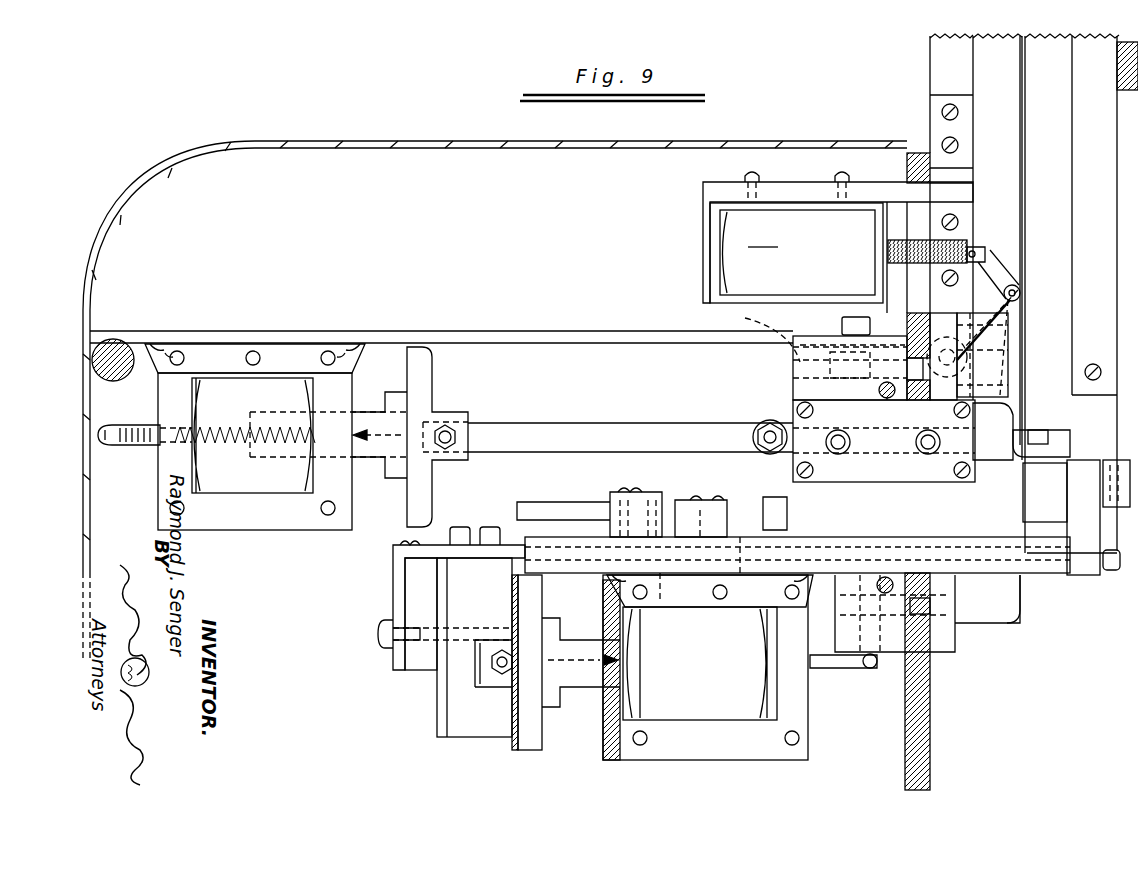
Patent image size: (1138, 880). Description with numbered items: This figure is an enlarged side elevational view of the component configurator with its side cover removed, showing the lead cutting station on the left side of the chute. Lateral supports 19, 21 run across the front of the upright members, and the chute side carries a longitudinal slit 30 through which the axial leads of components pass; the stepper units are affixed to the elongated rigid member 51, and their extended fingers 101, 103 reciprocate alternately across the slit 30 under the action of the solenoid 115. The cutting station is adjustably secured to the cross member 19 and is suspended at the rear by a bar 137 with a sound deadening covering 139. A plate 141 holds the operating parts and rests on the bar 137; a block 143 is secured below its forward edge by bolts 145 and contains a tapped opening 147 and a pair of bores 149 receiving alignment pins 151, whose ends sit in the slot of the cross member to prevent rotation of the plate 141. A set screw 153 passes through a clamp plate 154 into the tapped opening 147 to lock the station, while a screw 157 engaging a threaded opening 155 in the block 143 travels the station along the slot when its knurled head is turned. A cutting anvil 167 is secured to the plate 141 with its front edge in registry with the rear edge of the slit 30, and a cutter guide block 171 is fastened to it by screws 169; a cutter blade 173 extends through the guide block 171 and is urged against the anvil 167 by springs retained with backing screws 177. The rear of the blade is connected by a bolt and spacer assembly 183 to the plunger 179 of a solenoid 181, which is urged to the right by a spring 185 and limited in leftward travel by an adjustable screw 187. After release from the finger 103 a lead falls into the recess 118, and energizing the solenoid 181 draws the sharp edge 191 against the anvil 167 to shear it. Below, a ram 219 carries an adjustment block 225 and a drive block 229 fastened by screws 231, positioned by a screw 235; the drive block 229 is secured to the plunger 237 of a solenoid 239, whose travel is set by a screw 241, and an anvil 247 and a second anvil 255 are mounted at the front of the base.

The lateral support 19 is at (907, 324).
The lateral support 21 is at (930, 740).
The longitudinal slit 30 is at (1025, 173).
The elongated rigid member 51 is at (930, 66).
The extended finger 101 is at (1018, 340).
The extended finger 103 is at (1007, 363).
The solenoid 115 is at (838, 242).
The recess 118 is at (1028, 430).
The bar 137 is at (118, 352).
The sound deadening covering 139 is at (150, 345).
The plate 141 is at (527, 331).
The block 143 is at (795, 387).
The bolts 145 is at (845, 325).
The tapped opening 147 is at (758, 314).
The bores 149 is at (808, 347).
The alignment pins 151 is at (948, 380).
The set screw 153 is at (837, 368).
The clamp plate 154 is at (930, 332).
The threaded opening 155 is at (878, 391).
The screw 157 is at (888, 398).
The cutting anvil 167 is at (1012, 408).
The screws 169 is at (953, 414).
The cutter guide block 171 is at (790, 468).
The cutter blade 173 is at (1057, 430).
The backing screws 177 is at (915, 441).
The plunger 179 is at (572, 423).
The solenoid 181 is at (287, 530).
The bolt and spacer assembly 183 is at (760, 423).
The spring 185 is at (245, 443).
The adjustable screw 187 is at (120, 445).
The sharp edge 191 is at (1070, 448).
The ram 219 is at (438, 545).
The adjustment block 225 is at (402, 603).
The drive block 229 is at (437, 700).
The screws 231 is at (488, 527).
The screw 235 is at (378, 641).
The plunger 237 is at (576, 690).
The solenoid 239 is at (745, 762).
The screw 241 is at (820, 670).
The anvil 247 is at (1032, 522).
The second anvil 255 is at (1062, 527).